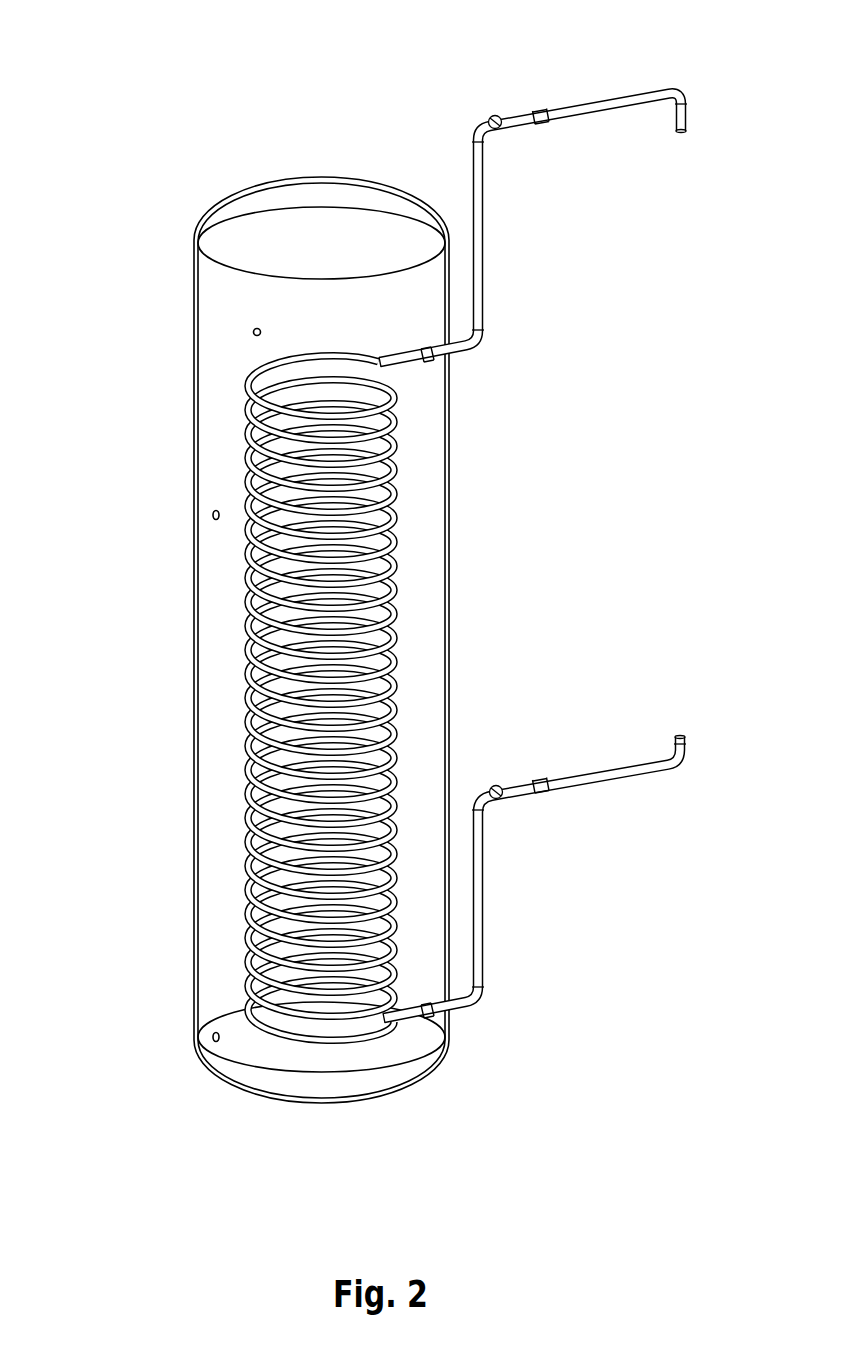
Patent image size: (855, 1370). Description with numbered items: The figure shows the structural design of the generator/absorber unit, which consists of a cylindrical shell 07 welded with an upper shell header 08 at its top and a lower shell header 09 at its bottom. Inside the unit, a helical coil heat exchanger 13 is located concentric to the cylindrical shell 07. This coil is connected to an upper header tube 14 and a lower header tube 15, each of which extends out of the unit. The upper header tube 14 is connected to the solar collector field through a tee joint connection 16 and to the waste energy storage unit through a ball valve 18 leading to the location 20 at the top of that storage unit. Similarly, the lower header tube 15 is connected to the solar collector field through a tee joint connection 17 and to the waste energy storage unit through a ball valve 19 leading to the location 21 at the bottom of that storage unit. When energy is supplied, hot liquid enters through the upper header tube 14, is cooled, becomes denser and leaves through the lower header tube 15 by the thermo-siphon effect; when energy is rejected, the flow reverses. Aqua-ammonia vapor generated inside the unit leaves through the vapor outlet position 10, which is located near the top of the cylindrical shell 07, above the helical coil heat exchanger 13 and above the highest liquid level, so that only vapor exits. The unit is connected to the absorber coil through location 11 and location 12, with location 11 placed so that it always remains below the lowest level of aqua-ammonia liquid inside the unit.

The cylindrical shell 07 is at (195, 733).
The upper shell header 08 is at (258, 186).
The lower shell header 09 is at (265, 1095).
The vapor outlet position 10 is at (253, 331).
The location for absorber coil connection 11 is at (212, 514).
The location for absorber coil connection 12 is at (200, 1030).
The helical coil heat exchanger 13 is at (395, 588).
The upper header tube 14 is at (453, 352).
The lower header tube 15 is at (447, 1003).
The tee joint connection 16 is at (491, 117).
The tee joint connection 17 is at (500, 798).
The ball valve 18 is at (541, 110).
The ball valve 19 is at (541, 780).
The location at the top of the waste energy storage unit 20 is at (677, 132).
The location at the bottom of the waste energy storage unit 21 is at (681, 735).